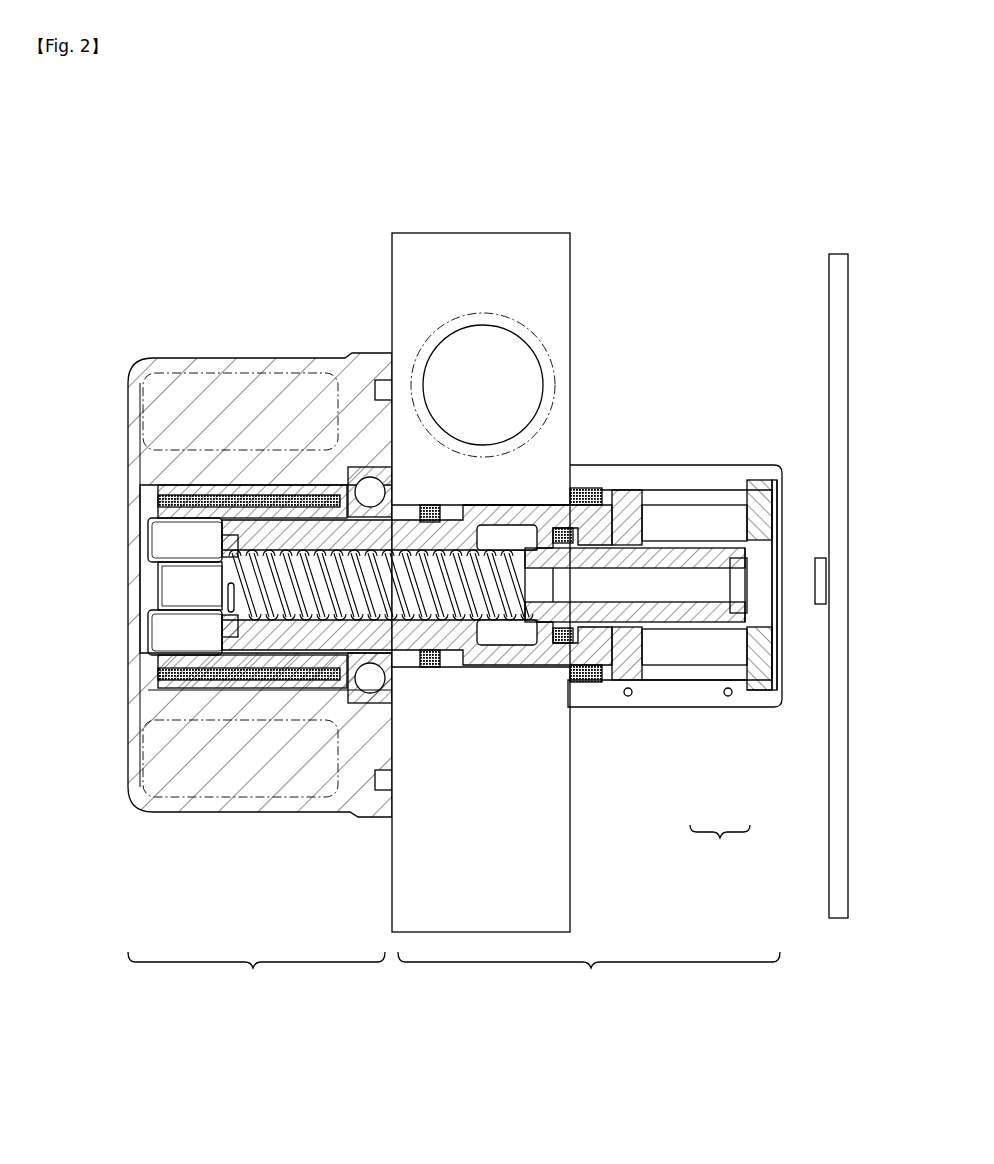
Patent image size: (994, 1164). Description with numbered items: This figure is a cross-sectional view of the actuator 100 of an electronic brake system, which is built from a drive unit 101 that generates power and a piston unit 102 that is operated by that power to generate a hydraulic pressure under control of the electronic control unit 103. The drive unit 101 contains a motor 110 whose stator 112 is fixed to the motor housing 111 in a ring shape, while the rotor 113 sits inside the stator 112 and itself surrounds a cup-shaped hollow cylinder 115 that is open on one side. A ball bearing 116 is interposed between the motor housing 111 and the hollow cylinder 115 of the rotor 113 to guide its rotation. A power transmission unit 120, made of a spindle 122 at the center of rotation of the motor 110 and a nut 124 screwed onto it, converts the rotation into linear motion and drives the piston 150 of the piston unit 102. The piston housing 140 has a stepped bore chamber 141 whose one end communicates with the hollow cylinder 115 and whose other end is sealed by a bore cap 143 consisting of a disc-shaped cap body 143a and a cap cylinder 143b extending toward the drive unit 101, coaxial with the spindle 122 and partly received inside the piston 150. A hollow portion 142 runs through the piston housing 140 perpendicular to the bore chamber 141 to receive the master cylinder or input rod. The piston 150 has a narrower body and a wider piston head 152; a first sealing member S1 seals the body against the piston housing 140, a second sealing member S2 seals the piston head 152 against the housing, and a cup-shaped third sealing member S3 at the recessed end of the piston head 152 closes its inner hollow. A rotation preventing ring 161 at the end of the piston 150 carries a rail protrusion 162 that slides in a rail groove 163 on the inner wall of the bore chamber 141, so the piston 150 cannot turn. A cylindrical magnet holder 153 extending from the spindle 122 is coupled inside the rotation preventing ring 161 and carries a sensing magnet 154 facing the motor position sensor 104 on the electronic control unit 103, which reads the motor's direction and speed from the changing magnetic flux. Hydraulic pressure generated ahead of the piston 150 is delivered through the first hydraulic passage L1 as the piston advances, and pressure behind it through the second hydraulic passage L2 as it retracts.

The actuator 100 is at (690, 147).
The drive unit 101 is at (256, 976).
The piston unit 102 is at (589, 976).
The electronic control unit 103 is at (838, 254).
The motor position sensor 104 is at (826, 565).
The motor 110 is at (118, 368).
The motor housing 111 is at (133, 440).
The stator 112 is at (230, 395).
The rotor 113 is at (160, 498).
The hollow cylinder 115 is at (150, 545).
The ball bearing 116 is at (362, 468).
The power transmission unit 120 is at (163, 634).
The spindle 122 is at (222, 590).
The nut 124 is at (148, 700).
The piston housing 140 is at (686, 326).
The bore chamber 141 is at (712, 520).
The hollow portion 142 is at (483, 313).
The bore cap 143 is at (720, 844).
The cap body 143a is at (762, 702).
The cap cylinder 143b is at (680, 710).
The piston 150 is at (545, 670).
The piston head 152 is at (520, 505).
The magnet holder 153 is at (745, 615).
The sensing magnet 154 is at (745, 587).
The rotation preventing ring 161 is at (618, 640).
The rail protrusion 162 is at (632, 490).
The rail groove 163 is at (688, 500).
The first sealing member S1 is at (431, 668).
The second sealing member S2 is at (588, 488).
The third sealing member S3 is at (560, 645).
The first hydraulic passage L1 is at (728, 698).
The second hydraulic passage L2 is at (628, 698).